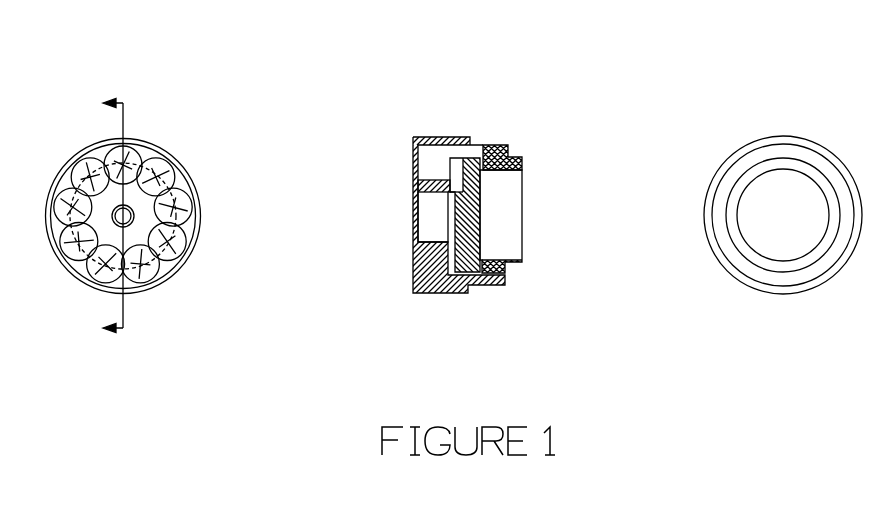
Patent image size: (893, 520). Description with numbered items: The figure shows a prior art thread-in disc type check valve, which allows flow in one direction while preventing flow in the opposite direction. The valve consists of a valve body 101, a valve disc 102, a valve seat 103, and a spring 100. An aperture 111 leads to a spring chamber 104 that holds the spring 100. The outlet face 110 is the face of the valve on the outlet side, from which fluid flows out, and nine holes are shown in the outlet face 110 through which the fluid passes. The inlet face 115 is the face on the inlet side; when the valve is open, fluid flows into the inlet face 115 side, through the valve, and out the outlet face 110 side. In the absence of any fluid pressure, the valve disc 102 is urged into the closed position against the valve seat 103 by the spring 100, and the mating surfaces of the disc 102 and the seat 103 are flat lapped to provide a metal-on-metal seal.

The spring 100 is at (422, 202).
The valve body 101 is at (443, 138).
The valve disc 102 is at (479, 258).
The valve seat 103 is at (492, 236).
The spring chamber 104 is at (442, 218).
The outlet face 110 is at (413, 185).
The aperture 111 is at (112, 223).
The inlet face 115 is at (725, 160).